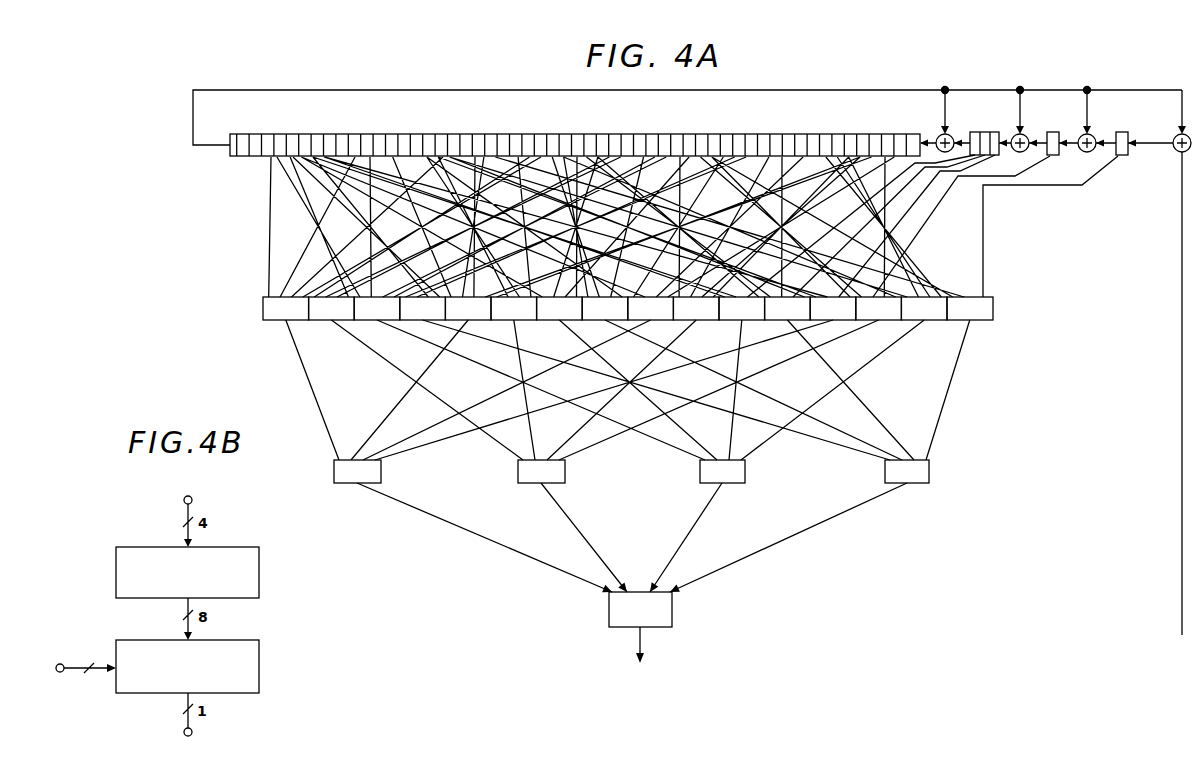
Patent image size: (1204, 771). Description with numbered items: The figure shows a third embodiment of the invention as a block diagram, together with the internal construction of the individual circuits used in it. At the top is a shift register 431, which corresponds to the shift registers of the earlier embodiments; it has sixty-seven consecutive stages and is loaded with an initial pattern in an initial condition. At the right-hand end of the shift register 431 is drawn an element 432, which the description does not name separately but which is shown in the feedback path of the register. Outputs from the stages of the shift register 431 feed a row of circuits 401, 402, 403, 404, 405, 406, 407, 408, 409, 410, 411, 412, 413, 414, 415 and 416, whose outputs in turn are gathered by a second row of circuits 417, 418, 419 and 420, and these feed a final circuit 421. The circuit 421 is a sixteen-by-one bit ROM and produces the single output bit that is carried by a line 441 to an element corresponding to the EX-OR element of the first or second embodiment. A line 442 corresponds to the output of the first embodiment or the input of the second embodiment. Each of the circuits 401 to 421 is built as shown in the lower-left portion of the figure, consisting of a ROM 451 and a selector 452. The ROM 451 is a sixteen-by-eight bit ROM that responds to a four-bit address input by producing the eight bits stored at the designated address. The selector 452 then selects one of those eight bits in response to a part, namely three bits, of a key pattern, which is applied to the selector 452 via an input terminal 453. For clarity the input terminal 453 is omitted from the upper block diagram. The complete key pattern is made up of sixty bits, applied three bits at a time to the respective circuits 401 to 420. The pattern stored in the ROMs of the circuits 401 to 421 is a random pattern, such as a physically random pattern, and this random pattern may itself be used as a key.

In FIG. 4A, the circuit 401 is at (263, 318).
In FIG. 4A, the circuit 402 is at (318, 321).
In FIG. 4A, the circuit 403 is at (372, 321).
In FIG. 4A, the circuit 404 is at (412, 321).
In FIG. 4A, the circuit 405 is at (465, 321).
In FIG. 4A, the circuit 406 is at (502, 321).
In FIG. 4A, the circuit 407 is at (548, 321).
In FIG. 4A, the circuit 408 is at (588, 321).
In FIG. 4A, the circuit 409 is at (642, 321).
In FIG. 4A, the circuit 410 is at (696, 321).
In FIG. 4A, the circuit 411 is at (757, 321).
In FIG. 4A, the circuit 412 is at (795, 321).
In FIG. 4A, the circuit 413 is at (845, 321).
In FIG. 4A, the circuit 414 is at (903, 321).
In FIG. 4A, the circuit 415 is at (940, 321).
In FIG. 4A, the circuit 416 is at (990, 321).
In FIG. 4A, the circuit 417 is at (381, 472).
In FIG. 4A, the circuit 418 is at (565, 472).
In FIG. 4A, the circuit 419 is at (745, 472).
In FIG. 4A, the circuit 420 is at (929, 472).
In FIG. 4A, the ROM 421 is at (672, 606).
In FIG. 4A, the shift register 431 is at (231, 157).
In FIG. 4A, the adder 432 is at (1172, 150).
In FIG. 4A, the line 441 is at (646, 644).
In FIG. 4A, the line 442 is at (1180, 418).
In FIG. 4B, the ROM 451 is at (259, 567).
In FIG. 4B, the selector 452 is at (259, 668).
In FIG. 4B, the input terminal 453 is at (62, 672).